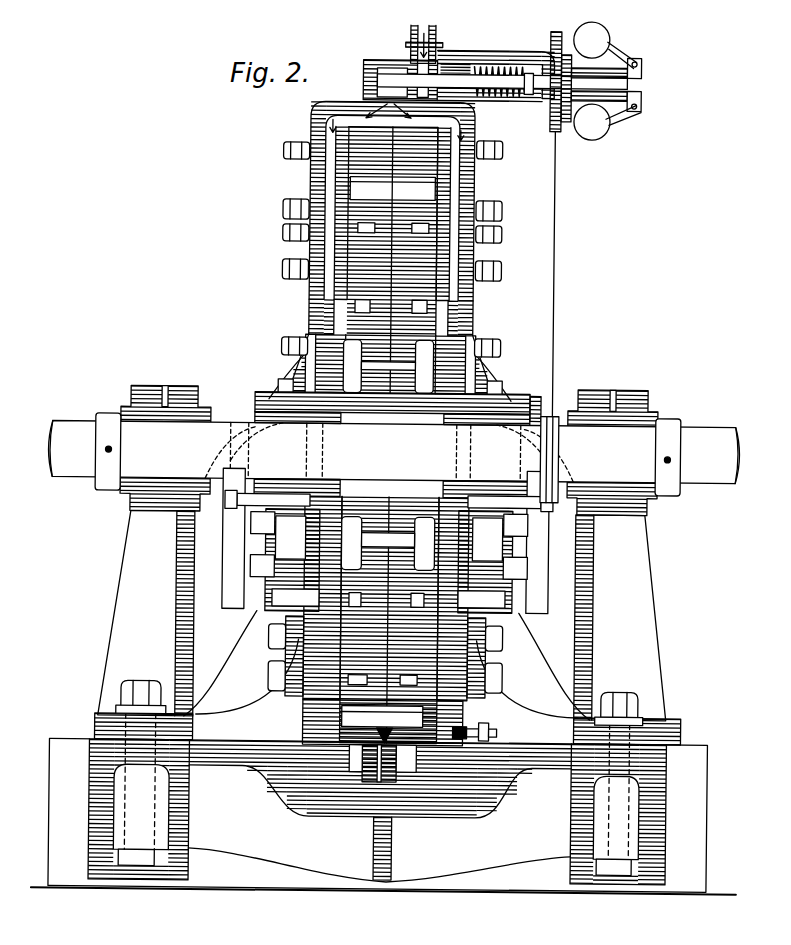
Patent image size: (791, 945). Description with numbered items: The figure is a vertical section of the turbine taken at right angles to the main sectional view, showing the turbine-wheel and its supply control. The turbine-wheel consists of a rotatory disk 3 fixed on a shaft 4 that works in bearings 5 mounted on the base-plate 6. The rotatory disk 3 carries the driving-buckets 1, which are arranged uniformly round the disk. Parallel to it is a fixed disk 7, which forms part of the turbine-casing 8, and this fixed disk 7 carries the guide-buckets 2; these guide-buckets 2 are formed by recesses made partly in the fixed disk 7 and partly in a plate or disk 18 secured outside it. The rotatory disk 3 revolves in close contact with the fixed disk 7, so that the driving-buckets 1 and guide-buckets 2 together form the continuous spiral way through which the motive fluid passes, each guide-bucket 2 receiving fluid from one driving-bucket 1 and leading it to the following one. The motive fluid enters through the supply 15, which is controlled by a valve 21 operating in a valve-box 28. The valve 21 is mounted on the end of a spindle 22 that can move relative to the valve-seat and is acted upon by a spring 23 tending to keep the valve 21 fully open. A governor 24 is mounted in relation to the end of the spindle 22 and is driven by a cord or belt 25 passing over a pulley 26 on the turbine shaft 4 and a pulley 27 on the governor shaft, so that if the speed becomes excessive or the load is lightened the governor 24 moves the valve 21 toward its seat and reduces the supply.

The driving-buckets 1 is at (440, 312).
The guide-buckets 2 is at (284, 598).
The rotatory disk 3 is at (434, 258).
The shaft 4 is at (394, 454).
The bearings 5 is at (199, 407).
The base-plate 6 is at (378, 802).
The fixed disk 7 is at (336, 190).
The turbine-casing 8 is at (352, 117).
The supply 15 is at (310, 110).
The plate or disk 18 is at (468, 182).
The valve 21 is at (370, 66).
The spindle 22 is at (452, 66).
The spring 23 is at (495, 88).
The governor 24 is at (604, 122).
The cord or belt 25 is at (554, 205).
The pulley 26 is at (549, 412).
The pulley 27 is at (547, 110).
The valve-box 28 is at (408, 52).